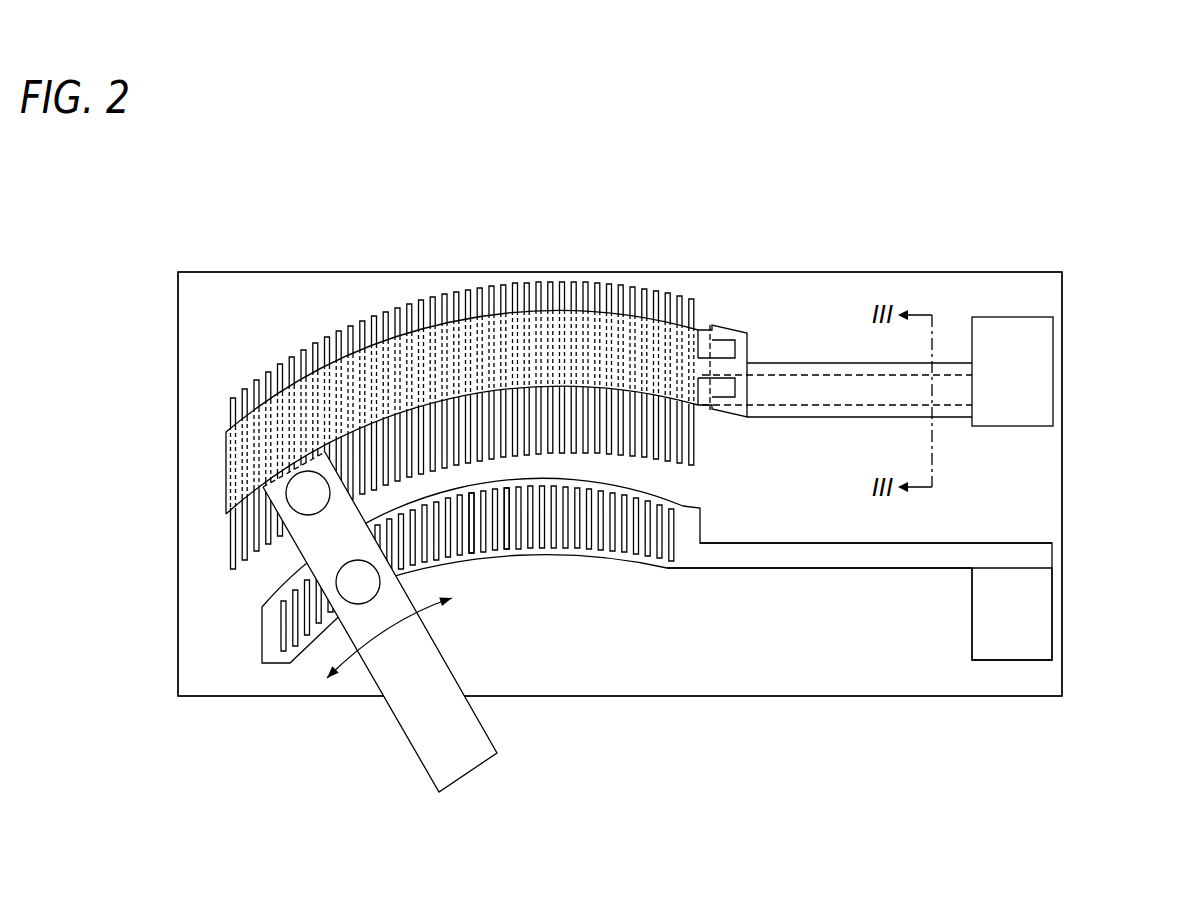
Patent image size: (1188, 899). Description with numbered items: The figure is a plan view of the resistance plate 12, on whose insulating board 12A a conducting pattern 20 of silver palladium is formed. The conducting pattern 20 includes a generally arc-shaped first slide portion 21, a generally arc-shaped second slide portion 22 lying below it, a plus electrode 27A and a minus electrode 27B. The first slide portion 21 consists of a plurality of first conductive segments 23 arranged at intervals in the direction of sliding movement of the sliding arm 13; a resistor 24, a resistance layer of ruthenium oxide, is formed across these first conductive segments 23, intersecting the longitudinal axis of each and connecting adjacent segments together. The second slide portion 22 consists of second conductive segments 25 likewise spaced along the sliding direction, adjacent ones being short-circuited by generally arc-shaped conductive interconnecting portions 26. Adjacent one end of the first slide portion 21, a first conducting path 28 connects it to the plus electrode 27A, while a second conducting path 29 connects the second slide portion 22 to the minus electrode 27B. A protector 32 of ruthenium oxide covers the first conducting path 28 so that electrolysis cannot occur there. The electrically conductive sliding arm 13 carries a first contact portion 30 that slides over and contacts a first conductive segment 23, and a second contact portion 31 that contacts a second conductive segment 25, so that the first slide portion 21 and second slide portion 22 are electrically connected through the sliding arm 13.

The resistance plate 12 is at (180, 264).
The insulating board 12A is at (190, 384).
The sliding arm 13 is at (458, 763).
The conducting pattern 20 is at (311, 330).
The first slide portion 21 is at (218, 533).
The second slide portion 22 is at (250, 636).
The first conductive segments 23 is at (256, 380).
The resistor 24 is at (226, 451).
The second conductive segments 25 is at (297, 626).
The conductive interconnecting portions 26 is at (505, 488).
The plus electrode 27A is at (1040, 404).
The minus electrode 27B is at (1040, 634).
The first conducting path 28 is at (813, 383).
The second conducting path 29 is at (822, 557).
The first contact portion 30 is at (308, 507).
The second contact portion 31 is at (360, 595).
The protector 32 is at (866, 363).